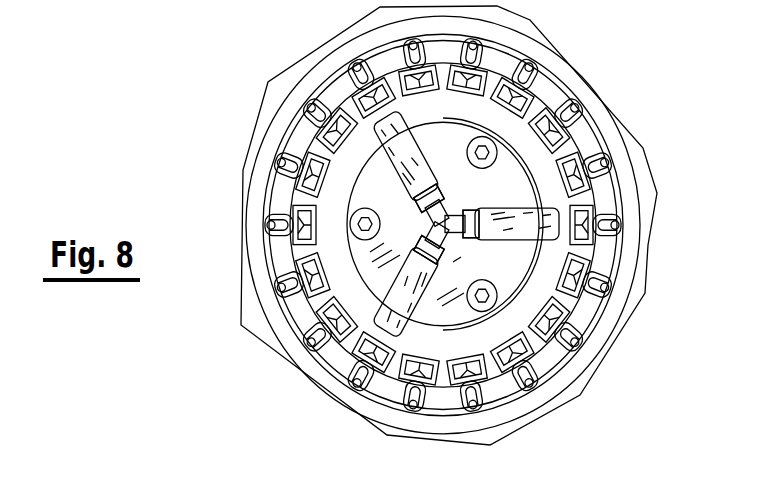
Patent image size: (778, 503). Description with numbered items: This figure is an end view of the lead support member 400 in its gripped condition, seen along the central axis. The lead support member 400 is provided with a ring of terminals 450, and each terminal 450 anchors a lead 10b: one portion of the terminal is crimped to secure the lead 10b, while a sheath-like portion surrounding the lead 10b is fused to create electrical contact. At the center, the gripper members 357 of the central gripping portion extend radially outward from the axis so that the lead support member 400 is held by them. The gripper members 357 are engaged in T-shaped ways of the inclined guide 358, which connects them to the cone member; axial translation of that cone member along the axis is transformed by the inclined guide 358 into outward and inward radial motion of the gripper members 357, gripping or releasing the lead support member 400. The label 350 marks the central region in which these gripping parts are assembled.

The lead support member 400 is at (330, 209).
The terminal 450 is at (562, 125).
The lead 10b is at (582, 108).
The central plate 350 is at (442, 161).
The gripper member 357 is at (392, 120).
The inclined guide 358 is at (418, 188).